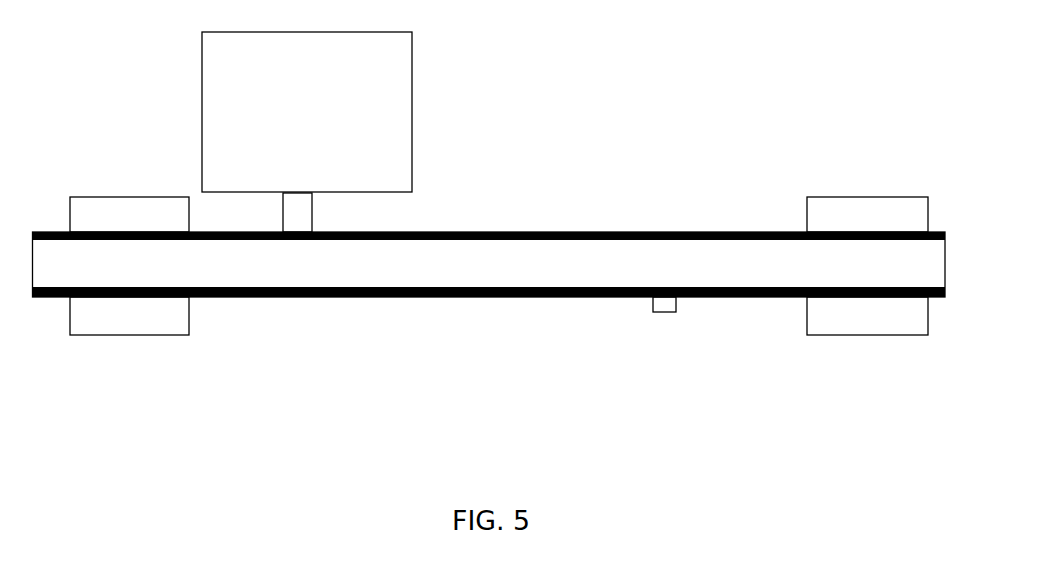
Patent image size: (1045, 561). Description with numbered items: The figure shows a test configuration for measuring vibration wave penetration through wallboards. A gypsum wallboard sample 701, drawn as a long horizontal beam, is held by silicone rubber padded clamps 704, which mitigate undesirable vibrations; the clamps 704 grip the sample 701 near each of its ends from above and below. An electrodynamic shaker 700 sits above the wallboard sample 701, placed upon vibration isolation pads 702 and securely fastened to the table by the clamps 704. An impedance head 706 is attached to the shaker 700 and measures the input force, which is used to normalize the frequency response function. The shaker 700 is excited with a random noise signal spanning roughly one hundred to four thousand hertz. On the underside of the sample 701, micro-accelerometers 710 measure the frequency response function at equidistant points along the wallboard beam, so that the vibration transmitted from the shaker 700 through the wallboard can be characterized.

The electrodynamic shaker 700 is at (284, 120).
The gypsum wallboard sample 701 is at (469, 275).
The vibration isolation pads 702 is at (499, 237).
The clamps 704 is at (130, 337).
The impedance head 706 is at (453, 167).
The micro-accelerometers 710 is at (663, 314).